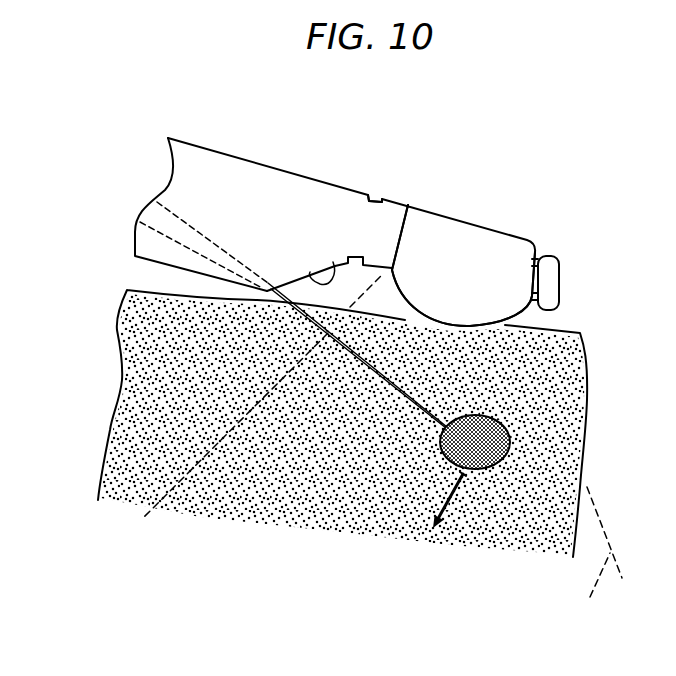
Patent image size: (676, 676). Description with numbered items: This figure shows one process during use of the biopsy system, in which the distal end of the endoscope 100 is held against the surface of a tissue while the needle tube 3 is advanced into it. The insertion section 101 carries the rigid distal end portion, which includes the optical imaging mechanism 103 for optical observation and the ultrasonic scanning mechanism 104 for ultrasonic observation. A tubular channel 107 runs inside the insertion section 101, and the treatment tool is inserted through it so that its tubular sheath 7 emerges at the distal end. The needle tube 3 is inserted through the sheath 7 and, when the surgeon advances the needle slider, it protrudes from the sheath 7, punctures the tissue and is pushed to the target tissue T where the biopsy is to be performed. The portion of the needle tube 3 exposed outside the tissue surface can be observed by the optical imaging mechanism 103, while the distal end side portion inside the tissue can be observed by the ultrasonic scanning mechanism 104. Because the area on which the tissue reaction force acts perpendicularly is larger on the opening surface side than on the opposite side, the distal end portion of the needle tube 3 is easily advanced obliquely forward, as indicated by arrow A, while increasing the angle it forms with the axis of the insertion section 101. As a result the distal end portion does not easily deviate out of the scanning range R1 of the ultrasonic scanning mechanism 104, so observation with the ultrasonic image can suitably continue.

The endoscope 100 is at (463, 184).
The insertion section 101 is at (360, 188).
The optical imaging mechanism 103 is at (333, 262).
The ultrasonic scanning mechanism 104 is at (487, 247).
The channel 107 is at (215, 265).
The sheath 7 is at (290, 284).
The needle tube 3 is at (368, 366).
The target tissue T is at (480, 472).
The arrow A is at (440, 513).
The scanning range R1 is at (597, 554).